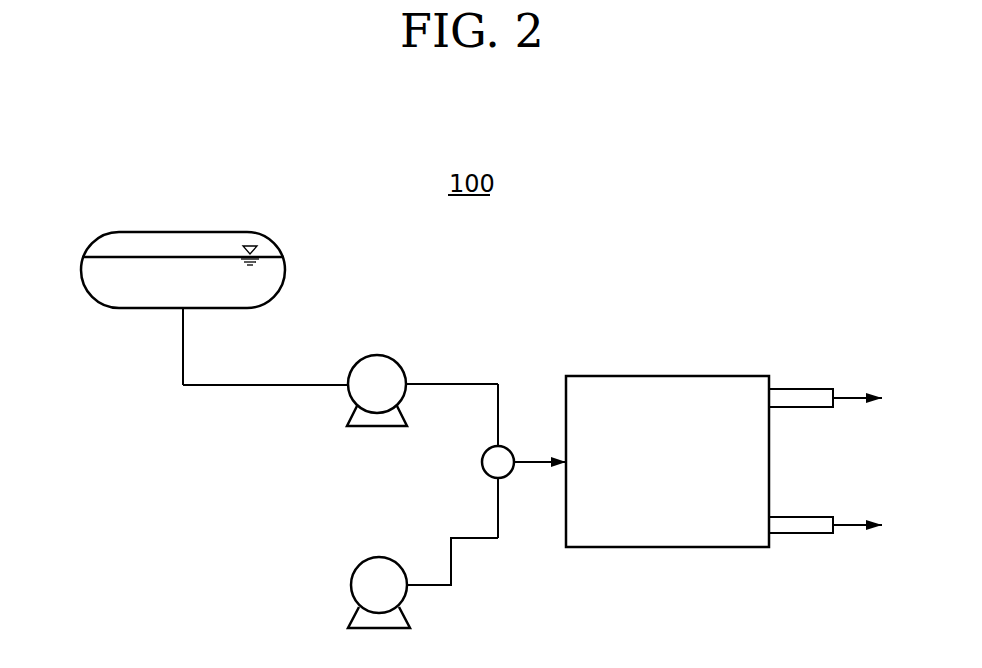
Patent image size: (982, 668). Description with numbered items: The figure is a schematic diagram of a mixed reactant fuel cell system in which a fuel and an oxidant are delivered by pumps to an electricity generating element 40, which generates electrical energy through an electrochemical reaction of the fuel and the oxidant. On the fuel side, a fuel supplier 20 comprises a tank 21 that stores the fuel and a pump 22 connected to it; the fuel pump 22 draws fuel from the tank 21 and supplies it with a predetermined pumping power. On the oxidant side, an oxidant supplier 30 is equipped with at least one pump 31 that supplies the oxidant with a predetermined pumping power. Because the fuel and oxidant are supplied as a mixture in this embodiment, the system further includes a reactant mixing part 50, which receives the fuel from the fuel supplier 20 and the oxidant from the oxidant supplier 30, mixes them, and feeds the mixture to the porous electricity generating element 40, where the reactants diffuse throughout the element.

The fuel supplier 20 is at (94, 231).
The tank 21 is at (206, 232).
The pump 22 is at (393, 357).
The oxidant supplier 30 is at (338, 614).
The pump 31 is at (351, 579).
The electricity generating element 40 is at (682, 548).
The reactant mixing part 50 is at (480, 480).